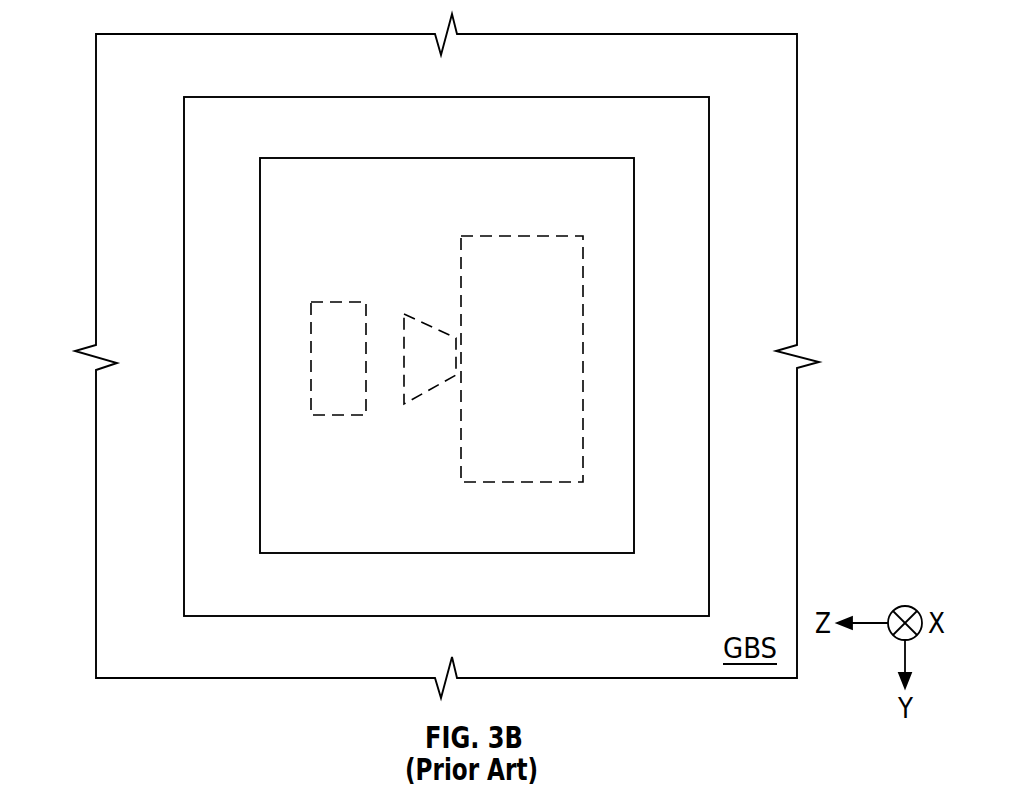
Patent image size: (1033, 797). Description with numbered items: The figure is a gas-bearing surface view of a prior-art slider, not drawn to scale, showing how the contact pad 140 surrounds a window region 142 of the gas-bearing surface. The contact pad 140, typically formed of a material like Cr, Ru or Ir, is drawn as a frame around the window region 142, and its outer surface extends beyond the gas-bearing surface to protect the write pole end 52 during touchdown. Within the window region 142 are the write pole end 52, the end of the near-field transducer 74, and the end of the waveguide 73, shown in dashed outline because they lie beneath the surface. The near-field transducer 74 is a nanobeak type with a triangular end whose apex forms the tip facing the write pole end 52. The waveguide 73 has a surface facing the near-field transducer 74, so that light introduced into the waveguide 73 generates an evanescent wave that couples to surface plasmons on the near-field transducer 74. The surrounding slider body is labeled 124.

The substrate / slider body 124 is at (768, 133).
The contact pad 140 is at (611, 113).
The window region 142 is at (634, 563).
The write pole end 52 is at (541, 247).
The waveguide 73 is at (346, 405).
The near-field transducer (NFT) 74 is at (415, 337).